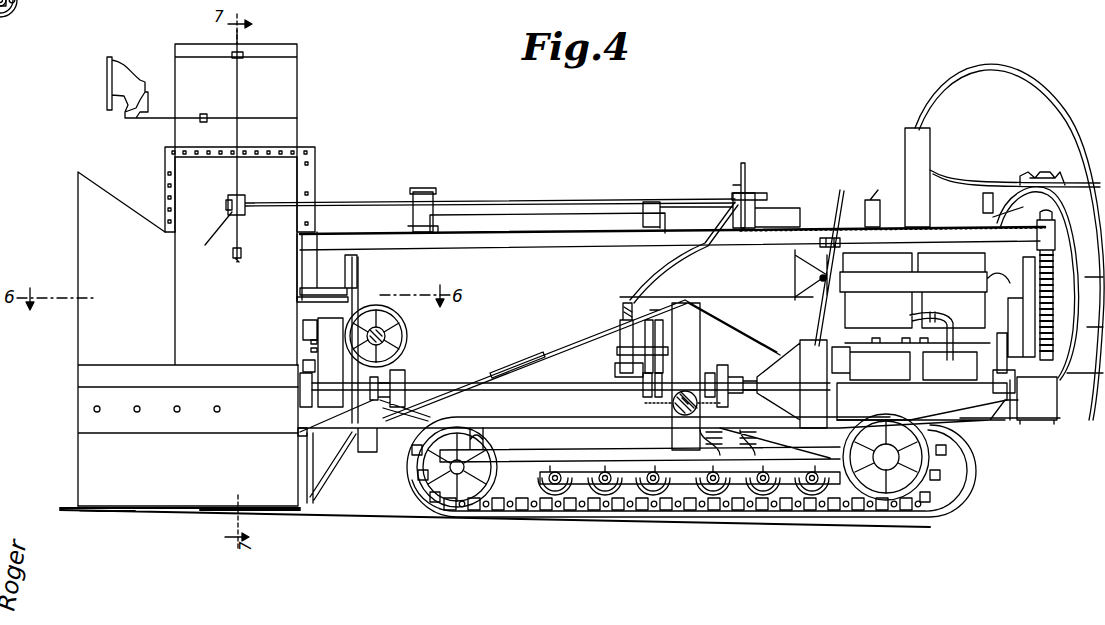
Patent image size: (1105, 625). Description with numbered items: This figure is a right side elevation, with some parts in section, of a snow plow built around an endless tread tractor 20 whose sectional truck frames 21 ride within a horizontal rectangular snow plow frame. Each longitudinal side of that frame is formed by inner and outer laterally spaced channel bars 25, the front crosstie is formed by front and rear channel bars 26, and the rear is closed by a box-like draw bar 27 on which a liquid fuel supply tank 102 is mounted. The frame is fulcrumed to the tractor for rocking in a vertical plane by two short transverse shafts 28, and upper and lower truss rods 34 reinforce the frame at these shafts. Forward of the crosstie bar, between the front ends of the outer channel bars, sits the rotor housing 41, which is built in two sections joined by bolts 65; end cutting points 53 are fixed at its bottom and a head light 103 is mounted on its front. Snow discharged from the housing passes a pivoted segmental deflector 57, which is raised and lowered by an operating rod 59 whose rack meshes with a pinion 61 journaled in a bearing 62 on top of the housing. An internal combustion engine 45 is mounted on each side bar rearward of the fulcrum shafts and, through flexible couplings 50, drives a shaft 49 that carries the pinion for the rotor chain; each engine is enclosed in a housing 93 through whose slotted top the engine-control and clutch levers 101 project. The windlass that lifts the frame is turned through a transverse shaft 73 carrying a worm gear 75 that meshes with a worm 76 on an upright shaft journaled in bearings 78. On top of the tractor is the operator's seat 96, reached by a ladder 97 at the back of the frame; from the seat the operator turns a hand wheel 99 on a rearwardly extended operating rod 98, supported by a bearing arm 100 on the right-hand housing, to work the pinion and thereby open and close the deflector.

The endless tread tractor 20 is at (505, 215).
The sectional truck frames 21 is at (488, 258).
The channel bars 25 is at (995, 412).
The channel bars 26 is at (305, 432).
The rear draw bar 27 is at (1045, 422).
The transverse shafts 28 is at (672, 405).
The truss rods 34 is at (590, 342).
The housing 41 is at (188, 339).
The internal combustion engine 45 is at (933, 336).
The shafts 49 is at (560, 390).
The flexible couplings 50 is at (405, 372).
The end cutting points 53 is at (110, 511).
The deflector 57 is at (236, 204).
The operating rod 59 is at (240, 84).
The pinion 61 is at (214, 234).
The bearing 62 is at (246, 198).
The bolts 65 is at (305, 147).
The transverse shaft 73 is at (382, 310).
The worm gear 75 is at (408, 335).
The worm 76 is at (311, 342).
The bearings 78 is at (305, 363).
The housing 93 is at (436, 227).
The seat 96 is at (870, 212).
The ladder 97 is at (1085, 125).
The operating rod 98 is at (590, 200).
The hand wheel 99 is at (750, 175).
The bearing arm 100 is at (712, 250).
The engine-control and clutch levers 101 is at (812, 266).
The liquid fuel supply tank 102 is at (988, 212).
The head light 103 is at (108, 93).